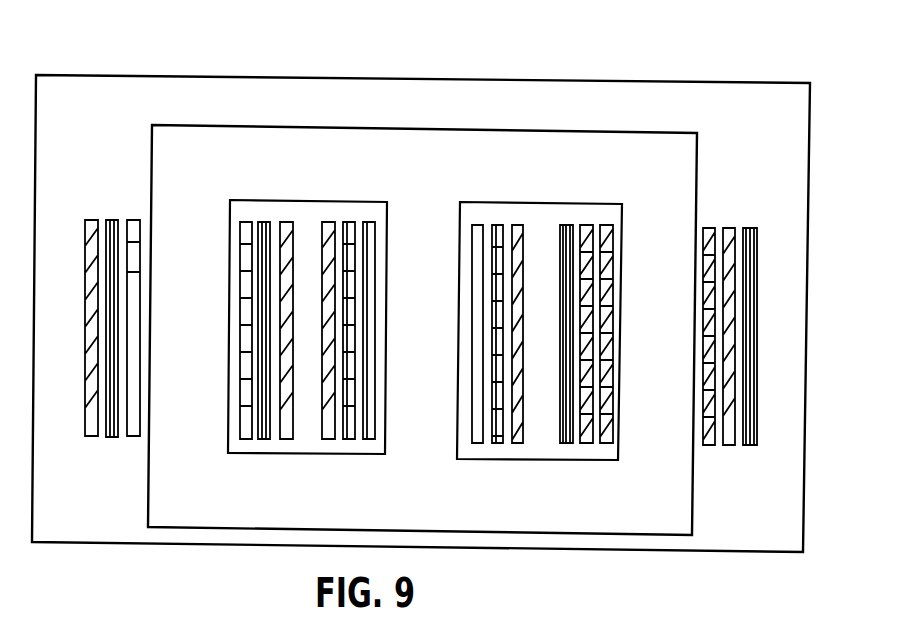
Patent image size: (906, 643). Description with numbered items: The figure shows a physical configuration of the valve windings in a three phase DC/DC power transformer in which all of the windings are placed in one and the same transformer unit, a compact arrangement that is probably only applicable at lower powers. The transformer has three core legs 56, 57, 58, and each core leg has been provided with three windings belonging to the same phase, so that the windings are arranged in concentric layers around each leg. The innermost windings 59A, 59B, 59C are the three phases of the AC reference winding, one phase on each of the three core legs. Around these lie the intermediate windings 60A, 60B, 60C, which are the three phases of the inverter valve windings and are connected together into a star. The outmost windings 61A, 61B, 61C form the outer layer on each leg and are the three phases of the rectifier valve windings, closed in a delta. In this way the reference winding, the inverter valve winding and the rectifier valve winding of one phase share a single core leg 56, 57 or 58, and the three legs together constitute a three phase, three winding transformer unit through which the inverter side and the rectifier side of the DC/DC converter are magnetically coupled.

The transformer core leg 56 is at (200, 375).
The transformer core leg 57 is at (433, 377).
The transformer core leg 58 is at (668, 379).
The innermost winding 59A is at (134, 436).
The innermost winding 59B is at (370, 439).
The innermost winding 59C is at (708, 445).
The intermediate winding 60A is at (112, 220).
The intermediate winding 60B is at (349, 222).
The intermediate winding 60C is at (729, 228).
The outmost winding 61A is at (90, 436).
The outmost winding 61B is at (327, 439).
The outmost winding 61C is at (750, 445).